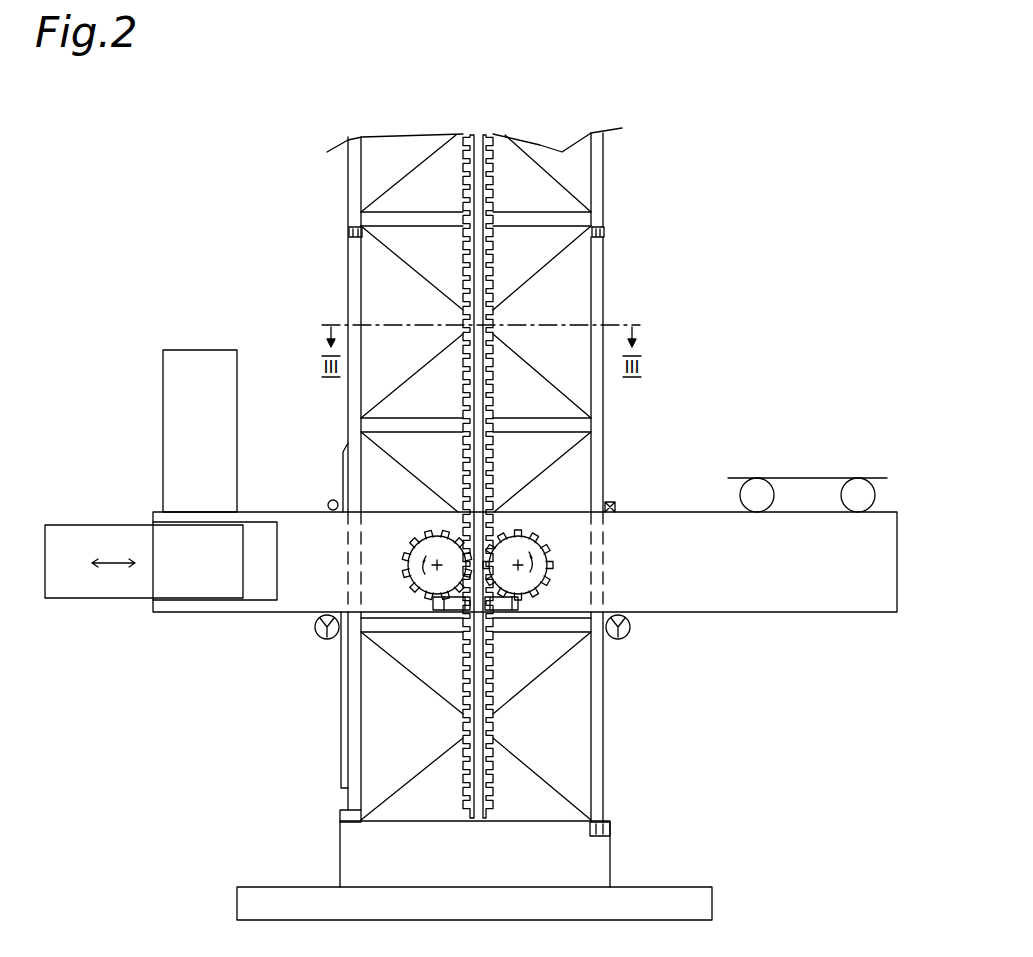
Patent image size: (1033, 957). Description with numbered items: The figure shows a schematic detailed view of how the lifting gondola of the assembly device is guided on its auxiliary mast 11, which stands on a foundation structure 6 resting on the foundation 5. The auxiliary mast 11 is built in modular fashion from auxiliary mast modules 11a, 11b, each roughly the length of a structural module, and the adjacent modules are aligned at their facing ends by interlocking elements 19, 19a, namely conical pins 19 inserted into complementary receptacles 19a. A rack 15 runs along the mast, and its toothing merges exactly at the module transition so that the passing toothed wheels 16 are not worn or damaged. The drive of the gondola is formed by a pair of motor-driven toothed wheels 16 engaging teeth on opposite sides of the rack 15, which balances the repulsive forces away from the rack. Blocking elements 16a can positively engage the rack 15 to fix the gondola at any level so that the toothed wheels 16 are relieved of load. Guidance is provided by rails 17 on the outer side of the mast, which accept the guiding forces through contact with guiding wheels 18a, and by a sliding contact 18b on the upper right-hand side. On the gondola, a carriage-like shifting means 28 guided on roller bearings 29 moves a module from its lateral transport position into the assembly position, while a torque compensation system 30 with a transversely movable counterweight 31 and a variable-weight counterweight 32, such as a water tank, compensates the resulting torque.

The foundation 5 is at (703, 905).
The foundation structure 6 is at (602, 858).
The auxiliary mast 11 is at (332, 255).
The auxiliary mast module 11a is at (600, 295).
The auxiliary mast module 11b is at (600, 175).
The rack 15 is at (477, 143).
The toothed wheel 16 is at (448, 553).
The blocking elements 16a is at (502, 603).
The rails 17 is at (343, 703).
The guiding wheels 18a is at (622, 632).
The sliding contact 18b is at (616, 507).
The conical pins 19 is at (605, 230).
The receptacles 19a is at (657, 233).
The shifting means 28 is at (808, 478).
The roller bearings 29 is at (755, 492).
The torque compensation system 30 is at (150, 445).
The counterweight 31 is at (83, 535).
The counterweight 32 is at (183, 380).